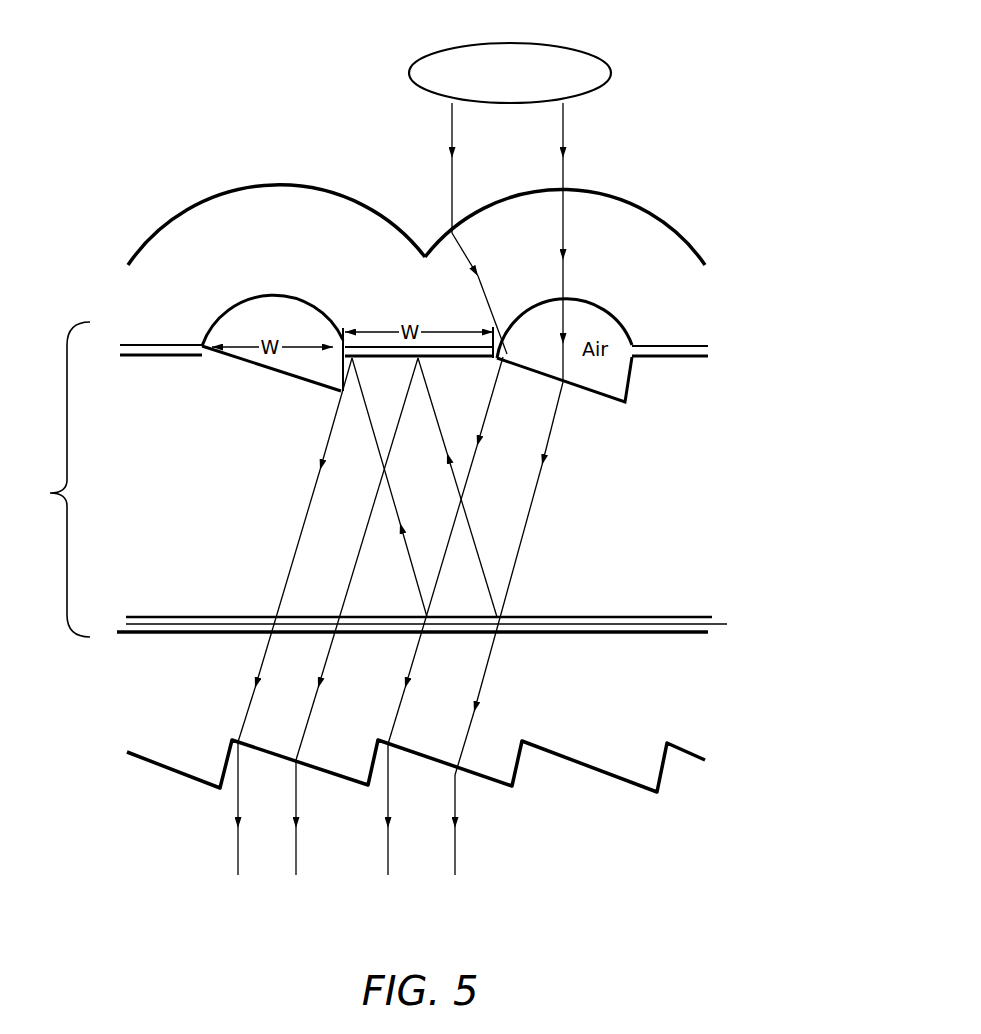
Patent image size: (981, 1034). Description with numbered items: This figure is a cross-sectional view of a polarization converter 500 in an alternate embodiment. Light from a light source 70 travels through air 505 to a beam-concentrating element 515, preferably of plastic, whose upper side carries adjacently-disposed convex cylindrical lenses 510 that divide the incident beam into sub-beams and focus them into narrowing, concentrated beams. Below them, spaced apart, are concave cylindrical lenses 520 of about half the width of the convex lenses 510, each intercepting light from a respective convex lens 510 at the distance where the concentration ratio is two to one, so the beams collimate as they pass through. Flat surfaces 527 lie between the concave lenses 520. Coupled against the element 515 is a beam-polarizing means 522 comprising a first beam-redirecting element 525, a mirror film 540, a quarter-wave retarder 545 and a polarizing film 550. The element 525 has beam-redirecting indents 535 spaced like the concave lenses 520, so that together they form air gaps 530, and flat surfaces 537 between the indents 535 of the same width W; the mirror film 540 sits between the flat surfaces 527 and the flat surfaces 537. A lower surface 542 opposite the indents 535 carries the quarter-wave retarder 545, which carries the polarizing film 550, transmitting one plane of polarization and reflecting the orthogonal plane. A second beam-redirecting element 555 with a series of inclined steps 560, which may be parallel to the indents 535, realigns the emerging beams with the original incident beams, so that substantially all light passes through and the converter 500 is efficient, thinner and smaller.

The light source 70 is at (468, 45).
The polarization converter 500 is at (672, 115).
The air 505 is at (131, 851).
The convex cylindrical lenses 510 is at (200, 203).
The beam-concentrating element 515 is at (259, 275).
The concave cylindrical lenses 520 is at (302, 297).
The beam-polarizing means 522 is at (46, 479).
The first beam-redirecting element 525 is at (182, 546).
The flat surfaces 527 is at (128, 343).
The air gaps 530 is at (293, 357).
The beam-redirecting indents 535 is at (313, 388).
The flat surfaces 537 is at (165, 357).
The mirror film 540 is at (712, 352).
The lower surface 542 is at (568, 616).
The quarter-wave retarder 545 is at (717, 618).
The polarizing film 550 is at (717, 635).
The second beam-redirecting element 555 is at (128, 718).
The inclined steps 560 is at (683, 747).